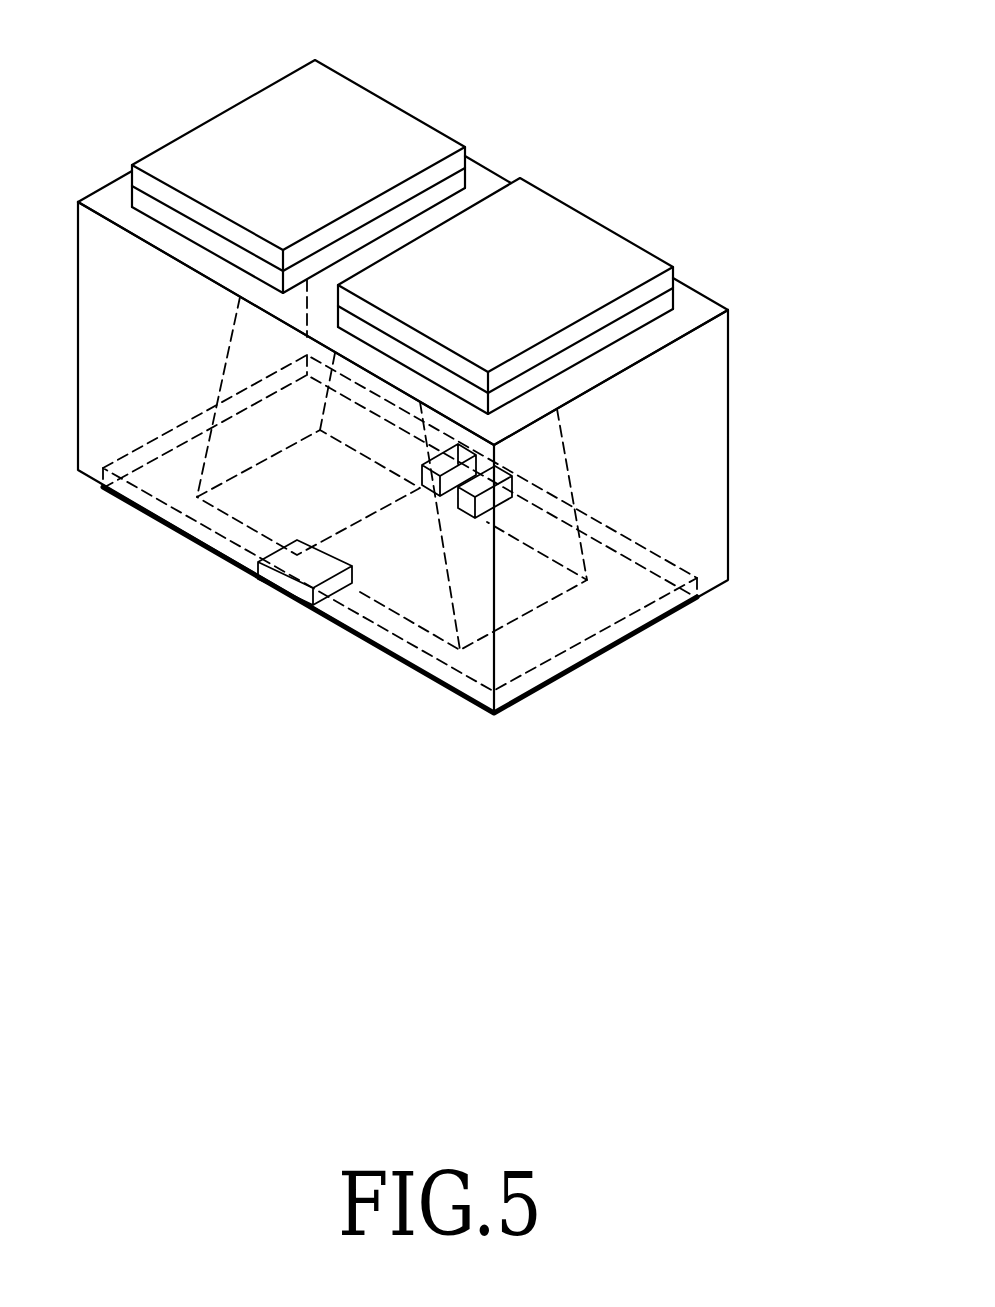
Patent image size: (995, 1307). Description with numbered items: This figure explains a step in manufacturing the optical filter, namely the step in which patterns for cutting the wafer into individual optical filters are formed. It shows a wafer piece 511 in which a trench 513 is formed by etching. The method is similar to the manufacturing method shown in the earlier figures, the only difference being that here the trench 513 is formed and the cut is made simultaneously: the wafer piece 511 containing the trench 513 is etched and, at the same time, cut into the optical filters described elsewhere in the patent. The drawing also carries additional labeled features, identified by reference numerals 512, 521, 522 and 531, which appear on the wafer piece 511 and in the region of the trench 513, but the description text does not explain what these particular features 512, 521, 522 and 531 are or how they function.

The wafer piece 511 is at (706, 440).
The upper substrate portion 512 is at (400, 237).
The trench 513 is at (420, 612).
The upper electrode 521 is at (681, 304).
The lower electrode 522 is at (158, 522).
The piezoelectric element 531 is at (677, 277).